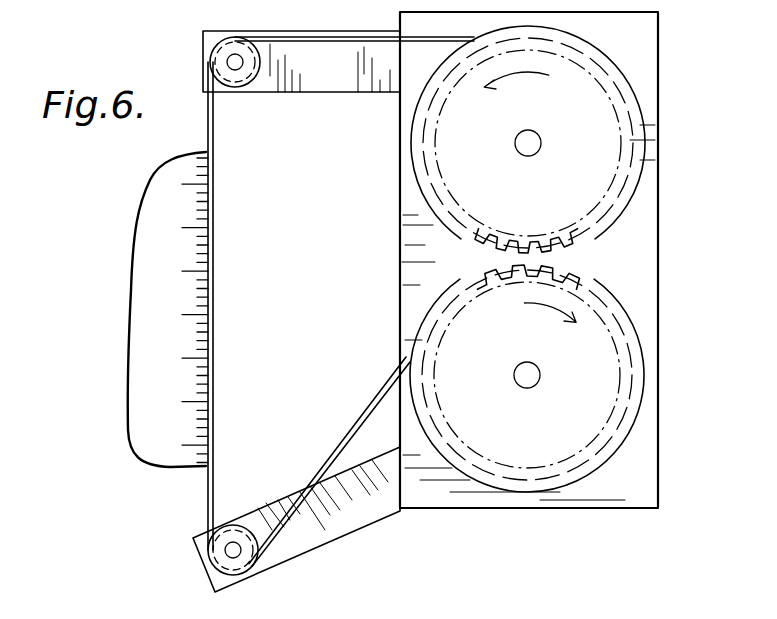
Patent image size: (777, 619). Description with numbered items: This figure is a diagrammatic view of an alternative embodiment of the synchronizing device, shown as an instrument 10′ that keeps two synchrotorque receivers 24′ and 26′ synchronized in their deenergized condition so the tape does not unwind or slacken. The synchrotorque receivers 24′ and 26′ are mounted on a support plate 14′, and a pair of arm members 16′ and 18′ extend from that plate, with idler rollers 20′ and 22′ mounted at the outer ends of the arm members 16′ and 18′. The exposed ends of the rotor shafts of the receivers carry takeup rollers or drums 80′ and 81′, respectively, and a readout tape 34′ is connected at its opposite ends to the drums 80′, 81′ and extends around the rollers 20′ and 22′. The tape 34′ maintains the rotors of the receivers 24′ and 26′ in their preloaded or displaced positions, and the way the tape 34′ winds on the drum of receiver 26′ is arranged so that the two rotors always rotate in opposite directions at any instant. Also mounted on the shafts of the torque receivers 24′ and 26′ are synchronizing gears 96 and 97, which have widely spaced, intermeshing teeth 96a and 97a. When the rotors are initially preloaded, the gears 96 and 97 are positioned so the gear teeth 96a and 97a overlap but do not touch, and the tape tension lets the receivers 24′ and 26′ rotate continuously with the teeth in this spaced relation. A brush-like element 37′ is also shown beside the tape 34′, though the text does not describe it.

The instrument 10' is at (136, 510).
The support plate 14' is at (529, 282).
The arm member 16' is at (301, 87).
The arm member 18' is at (312, 519).
The idler roller 20' is at (244, 90).
The idler roller 22' is at (238, 525).
The synchrotorque receiver 24' is at (564, 132).
The synchrotorque receiver 26' is at (562, 385).
The readout tape 34' is at (341, 301).
The brush 37' is at (138, 309).
The takeup roller or drum 80' is at (568, 143).
The takeup roller or drum 81' is at (570, 367).
The synchronizing gear 96 is at (607, 147).
The gear teeth 96a is at (483, 243).
The synchronizing gear 97 is at (608, 352).
The gear teeth 97a is at (497, 273).